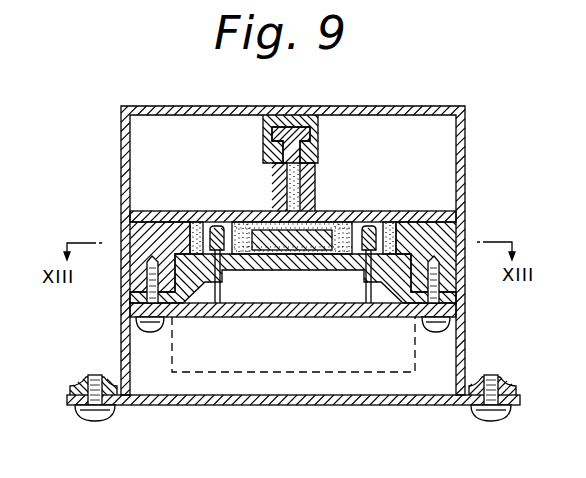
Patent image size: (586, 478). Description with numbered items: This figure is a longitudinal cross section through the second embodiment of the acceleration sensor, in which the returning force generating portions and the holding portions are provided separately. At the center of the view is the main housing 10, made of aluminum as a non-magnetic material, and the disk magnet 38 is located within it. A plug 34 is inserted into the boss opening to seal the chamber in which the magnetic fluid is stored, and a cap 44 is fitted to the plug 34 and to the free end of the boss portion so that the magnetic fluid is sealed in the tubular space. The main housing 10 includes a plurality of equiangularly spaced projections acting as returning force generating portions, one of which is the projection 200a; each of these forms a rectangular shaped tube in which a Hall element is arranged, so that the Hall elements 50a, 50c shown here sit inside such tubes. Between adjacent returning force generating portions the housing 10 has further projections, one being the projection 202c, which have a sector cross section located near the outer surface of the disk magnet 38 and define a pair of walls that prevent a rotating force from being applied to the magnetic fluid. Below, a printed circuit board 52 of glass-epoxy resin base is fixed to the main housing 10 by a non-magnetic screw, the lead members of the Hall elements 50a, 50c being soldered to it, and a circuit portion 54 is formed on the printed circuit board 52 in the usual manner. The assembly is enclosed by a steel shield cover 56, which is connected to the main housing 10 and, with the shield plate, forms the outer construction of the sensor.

The main housing 10 is at (387, 318).
The plug 34 is at (288, 122).
The disk magnet 38 is at (260, 228).
The cap 44 is at (265, 150).
The Hall element 50a is at (368, 238).
The Hall element 50c is at (217, 230).
The printed circuit board 52 is at (287, 318).
The circuit portion 54 is at (215, 377).
The shield cover 56 is at (126, 188).
The projection 200a is at (392, 237).
The projection 202c is at (200, 236).